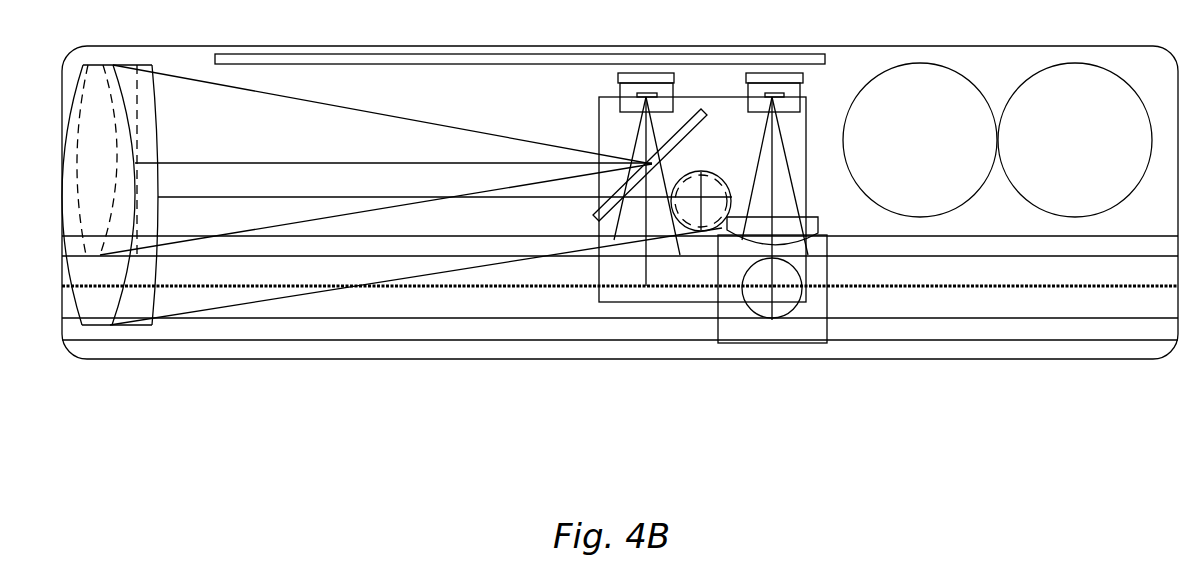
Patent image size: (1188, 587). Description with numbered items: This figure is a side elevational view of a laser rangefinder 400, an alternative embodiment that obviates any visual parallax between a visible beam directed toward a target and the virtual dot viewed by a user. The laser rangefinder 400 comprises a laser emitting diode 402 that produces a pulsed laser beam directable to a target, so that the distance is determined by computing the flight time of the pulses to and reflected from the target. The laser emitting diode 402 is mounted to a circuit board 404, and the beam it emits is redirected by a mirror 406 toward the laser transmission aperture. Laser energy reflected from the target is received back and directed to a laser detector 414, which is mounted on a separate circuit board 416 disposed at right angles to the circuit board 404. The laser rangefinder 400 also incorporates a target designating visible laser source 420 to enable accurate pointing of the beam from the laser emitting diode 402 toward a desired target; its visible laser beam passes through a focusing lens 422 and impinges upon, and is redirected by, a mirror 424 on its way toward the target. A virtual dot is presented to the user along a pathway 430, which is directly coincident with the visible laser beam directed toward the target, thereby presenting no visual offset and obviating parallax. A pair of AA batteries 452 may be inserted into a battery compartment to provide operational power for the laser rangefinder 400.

The laser rangefinder 400 is at (624, 467).
The laser emitting diode 402 is at (635, 72).
The circuit board 404 is at (720, 54).
The mirror 406 is at (690, 110).
The laser detector 414 is at (718, 172).
The separate circuit board 416 is at (598, 114).
The target designating visible laser source 420 is at (793, 72).
The focusing lens 422 is at (820, 219).
The mirror 424 is at (718, 333).
The pathway 430 is at (1036, 290).
The AA batteries 452 is at (928, 63).